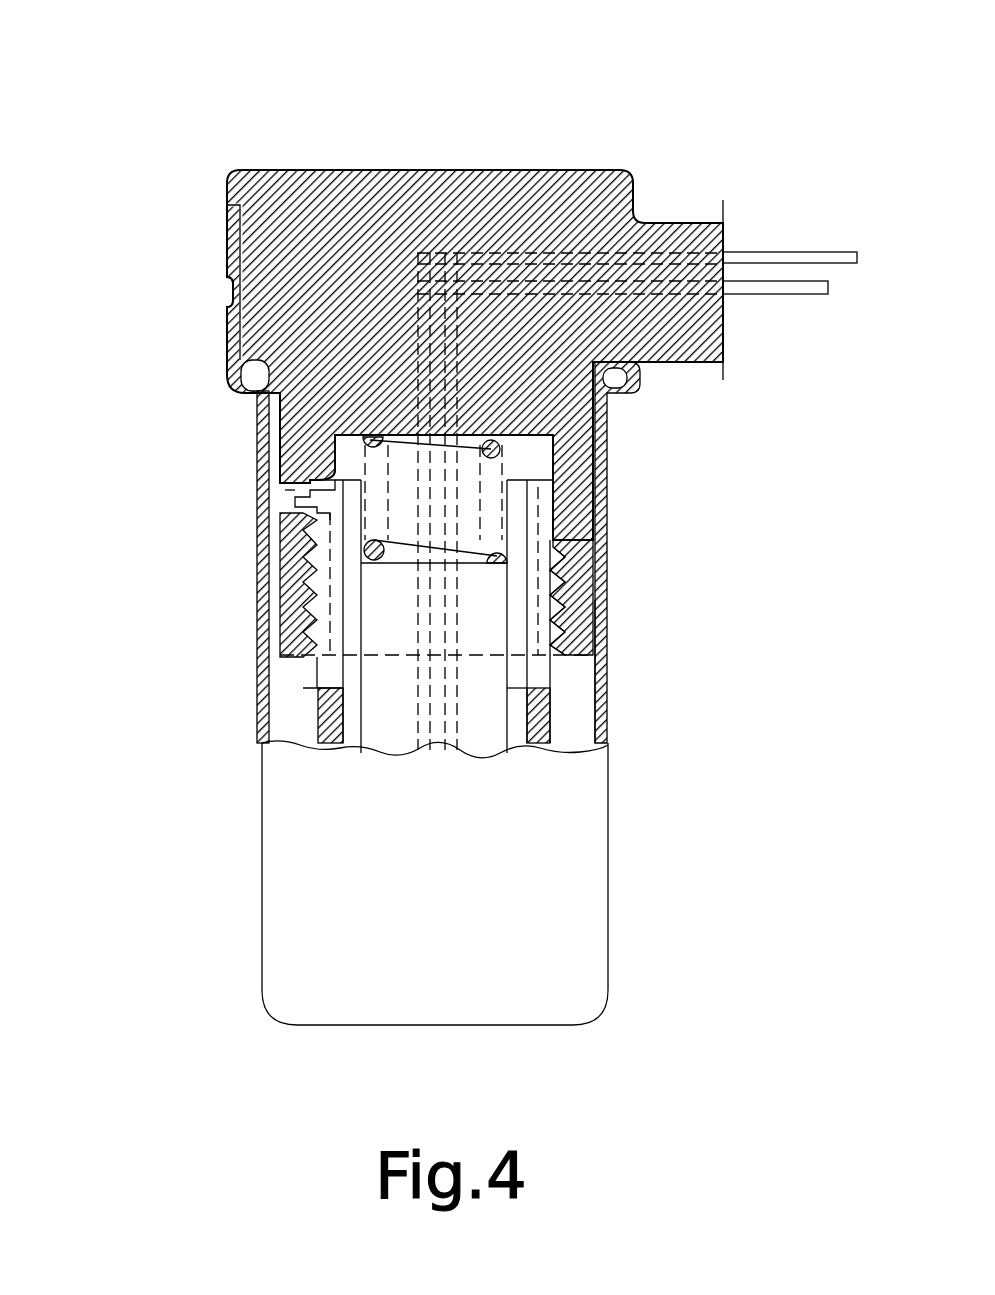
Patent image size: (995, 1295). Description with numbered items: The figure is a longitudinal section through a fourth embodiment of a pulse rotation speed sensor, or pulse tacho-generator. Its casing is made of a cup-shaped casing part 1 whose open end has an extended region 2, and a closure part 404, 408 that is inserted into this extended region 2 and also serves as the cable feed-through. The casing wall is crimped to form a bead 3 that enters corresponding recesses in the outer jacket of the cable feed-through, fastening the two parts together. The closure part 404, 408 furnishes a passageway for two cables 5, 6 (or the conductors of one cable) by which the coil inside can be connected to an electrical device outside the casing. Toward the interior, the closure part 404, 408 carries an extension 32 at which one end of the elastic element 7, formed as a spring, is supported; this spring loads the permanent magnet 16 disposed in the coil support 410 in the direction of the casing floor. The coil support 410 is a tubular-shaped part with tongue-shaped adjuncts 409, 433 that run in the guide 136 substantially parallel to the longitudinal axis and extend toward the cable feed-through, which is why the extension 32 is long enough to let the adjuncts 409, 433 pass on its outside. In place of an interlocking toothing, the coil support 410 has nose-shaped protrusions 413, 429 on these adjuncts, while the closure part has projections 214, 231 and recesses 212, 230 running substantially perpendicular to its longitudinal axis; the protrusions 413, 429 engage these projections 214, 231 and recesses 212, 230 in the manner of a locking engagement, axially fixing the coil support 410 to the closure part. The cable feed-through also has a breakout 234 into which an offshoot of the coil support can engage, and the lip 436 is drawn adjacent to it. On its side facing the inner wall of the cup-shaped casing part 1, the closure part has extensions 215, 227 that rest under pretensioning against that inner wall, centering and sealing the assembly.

The closure part 404 is at (275, 170).
The cable 5 is at (447, 255).
The cable 6 is at (517, 255).
The elastic element 7 is at (557, 433).
The closure part 408 is at (680, 223).
The bead 3 is at (233, 297).
The extended region 2 is at (227, 345).
The cup-shaped casing part 1 is at (255, 413).
The extension 32 is at (300, 448).
The body lip 436 is at (300, 480).
The breakout 234 is at (300, 503).
The projection 231 is at (300, 555).
The recess 230 is at (295, 600).
The protrusion 429 is at (262, 668).
The extension 227 is at (330, 675).
The tongue-shaped adjunct 433 is at (320, 735).
The coil support 410 is at (333, 742).
The tongue-shaped adjunct 409 is at (545, 495).
The recess 212 is at (560, 545).
The protrusion 413 is at (565, 570).
The projection 214 is at (575, 600).
The extension 215 is at (590, 650).
The guide 136 is at (557, 640).
The permanent magnet 16 is at (483, 637).